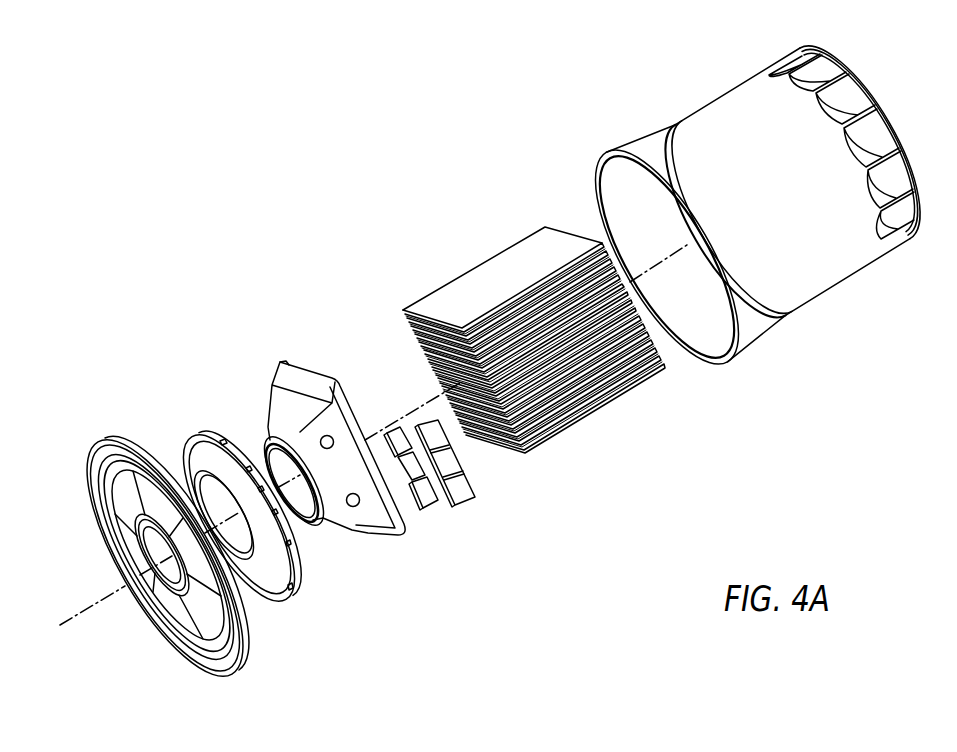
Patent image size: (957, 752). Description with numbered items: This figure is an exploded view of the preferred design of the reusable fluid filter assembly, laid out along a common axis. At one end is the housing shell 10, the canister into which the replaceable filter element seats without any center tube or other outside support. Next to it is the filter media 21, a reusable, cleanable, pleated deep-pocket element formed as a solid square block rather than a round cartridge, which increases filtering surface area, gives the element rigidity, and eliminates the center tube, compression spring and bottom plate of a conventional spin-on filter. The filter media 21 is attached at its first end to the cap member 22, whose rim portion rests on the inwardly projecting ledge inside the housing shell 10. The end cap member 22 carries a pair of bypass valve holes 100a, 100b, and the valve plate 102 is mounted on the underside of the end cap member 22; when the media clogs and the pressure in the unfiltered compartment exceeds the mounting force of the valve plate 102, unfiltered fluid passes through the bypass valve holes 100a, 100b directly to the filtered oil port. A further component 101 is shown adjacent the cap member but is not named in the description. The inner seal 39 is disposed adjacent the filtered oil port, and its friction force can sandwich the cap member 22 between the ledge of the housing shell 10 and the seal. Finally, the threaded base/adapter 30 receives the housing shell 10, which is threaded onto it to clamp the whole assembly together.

The housing shell 10 is at (802, 190).
The filter media 21 is at (603, 403).
The cap member 22 is at (291, 450).
The threaded base/adapter 30 is at (226, 678).
The inner seal 39 is at (282, 592).
The bypass valve hole 100a is at (352, 508).
The bypass valve hole 100b is at (330, 434).
The lens ring 101 is at (273, 467).
The valve plate 102 is at (437, 511).